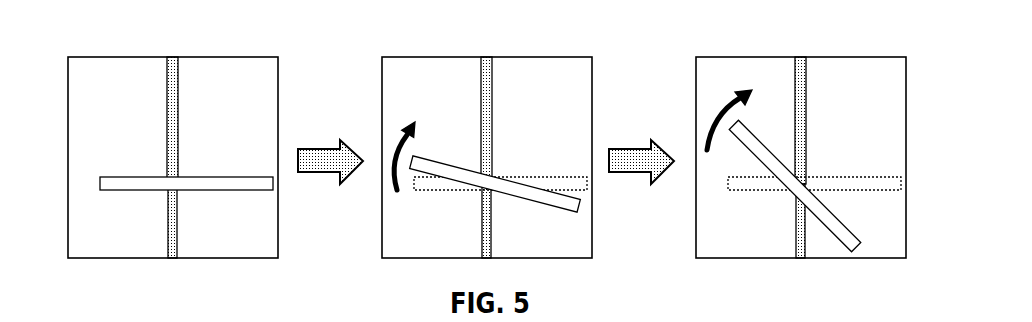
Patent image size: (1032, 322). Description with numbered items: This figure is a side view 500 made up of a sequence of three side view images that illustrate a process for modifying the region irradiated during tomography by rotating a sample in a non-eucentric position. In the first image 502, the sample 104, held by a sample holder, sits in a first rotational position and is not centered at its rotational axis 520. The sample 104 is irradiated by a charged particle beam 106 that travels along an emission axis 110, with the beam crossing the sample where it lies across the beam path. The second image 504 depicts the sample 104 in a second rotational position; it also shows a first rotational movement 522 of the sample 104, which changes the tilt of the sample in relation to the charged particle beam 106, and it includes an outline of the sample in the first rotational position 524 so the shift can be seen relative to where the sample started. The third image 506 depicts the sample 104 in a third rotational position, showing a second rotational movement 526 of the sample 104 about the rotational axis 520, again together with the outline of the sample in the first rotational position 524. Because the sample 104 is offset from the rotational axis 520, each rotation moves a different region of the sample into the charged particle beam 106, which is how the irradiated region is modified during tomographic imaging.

The side view 500 is at (70, 41).
The image 502 is at (264, 47).
The image 504 is at (586, 46).
The image 506 is at (904, 47).
The sample 104 is at (140, 177).
The charged particle beam 106 is at (181, 110).
The emission axis 110 is at (172, 73).
The rotational axis 520 is at (174, 164).
The first rotational movement 522 is at (412, 120).
The outline of the sample in the first rotational position 524 is at (563, 175).
The second rotational movement 526 is at (748, 88).